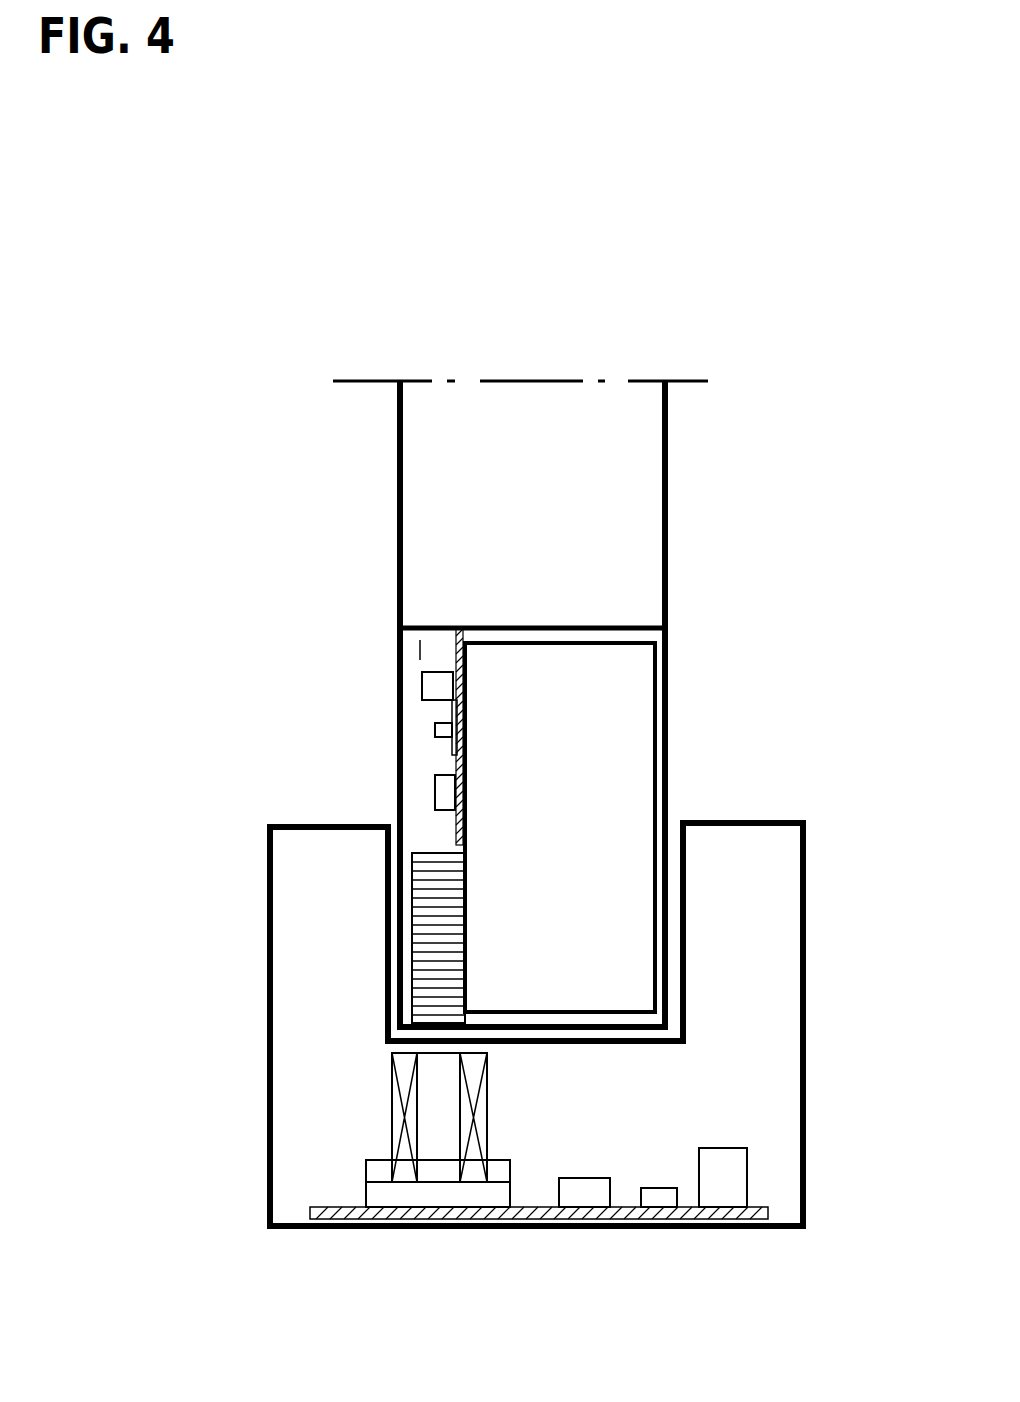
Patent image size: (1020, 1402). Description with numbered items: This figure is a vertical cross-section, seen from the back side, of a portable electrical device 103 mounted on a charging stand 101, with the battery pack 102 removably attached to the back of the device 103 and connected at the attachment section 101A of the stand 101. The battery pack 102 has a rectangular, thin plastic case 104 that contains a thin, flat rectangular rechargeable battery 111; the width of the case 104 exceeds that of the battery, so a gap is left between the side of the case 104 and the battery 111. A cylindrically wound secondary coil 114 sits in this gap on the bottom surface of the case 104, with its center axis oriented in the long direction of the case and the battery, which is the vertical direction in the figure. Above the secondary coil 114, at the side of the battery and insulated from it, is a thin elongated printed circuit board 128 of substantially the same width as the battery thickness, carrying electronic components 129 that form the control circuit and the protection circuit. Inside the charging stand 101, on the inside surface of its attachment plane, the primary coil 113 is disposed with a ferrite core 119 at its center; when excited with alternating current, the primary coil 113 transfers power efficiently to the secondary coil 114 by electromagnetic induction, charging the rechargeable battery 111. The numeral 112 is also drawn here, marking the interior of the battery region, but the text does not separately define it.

The charging stand 101 is at (778, 920).
The attachment section 101A is at (680, 808).
The battery pack 102 is at (680, 677).
The portable electrical device 103 is at (640, 498).
The case 104 is at (400, 760).
The rechargeable battery 111 is at (553, 637).
The secondary battery cell 112 is at (590, 855).
The primary coil 113 is at (477, 1123).
The secondary coil 114 is at (426, 928).
The ferrite core 119 is at (437, 1110).
The printed circuit board 128 is at (455, 705).
The electronic components 129 is at (421, 650).